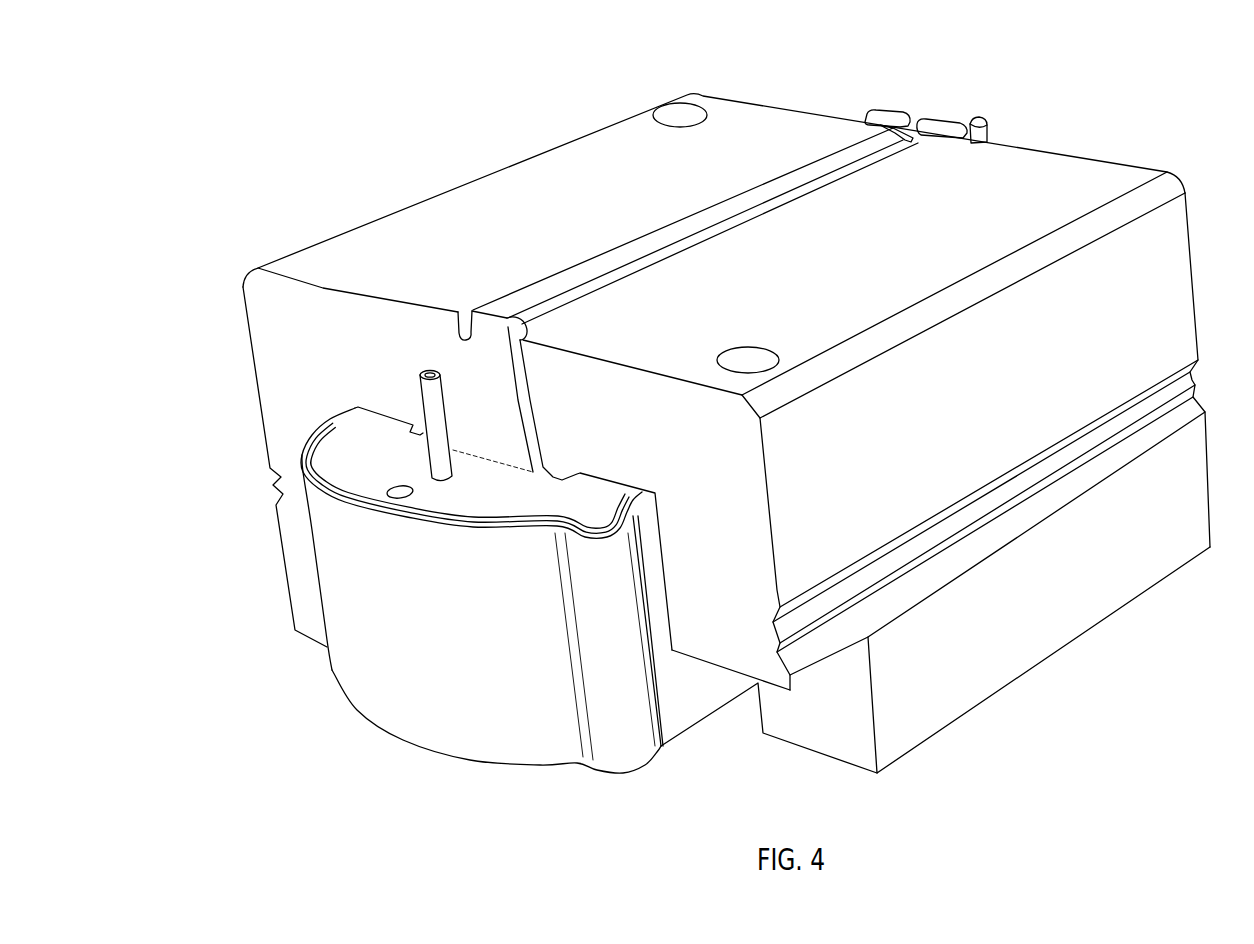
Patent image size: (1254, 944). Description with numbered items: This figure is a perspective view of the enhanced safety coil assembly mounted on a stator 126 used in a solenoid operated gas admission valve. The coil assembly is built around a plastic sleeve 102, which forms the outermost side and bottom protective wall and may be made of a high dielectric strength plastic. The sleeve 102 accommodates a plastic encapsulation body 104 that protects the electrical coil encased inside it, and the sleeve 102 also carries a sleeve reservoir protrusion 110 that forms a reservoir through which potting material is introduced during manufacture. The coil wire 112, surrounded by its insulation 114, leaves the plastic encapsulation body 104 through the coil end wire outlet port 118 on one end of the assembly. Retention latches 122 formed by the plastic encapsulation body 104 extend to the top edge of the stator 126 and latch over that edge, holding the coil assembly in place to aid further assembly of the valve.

The plastic sleeve 102 is at (403, 683).
The plastic encapsulation body 104 is at (370, 440).
The sleeve reservoir protrusion 110 is at (622, 743).
The coil wire 112 is at (430, 372).
The insulation 114 is at (438, 443).
The coil end wire outlet port 118 is at (400, 484).
The retention latches 122 is at (517, 383).
The stator 126 is at (495, 190).